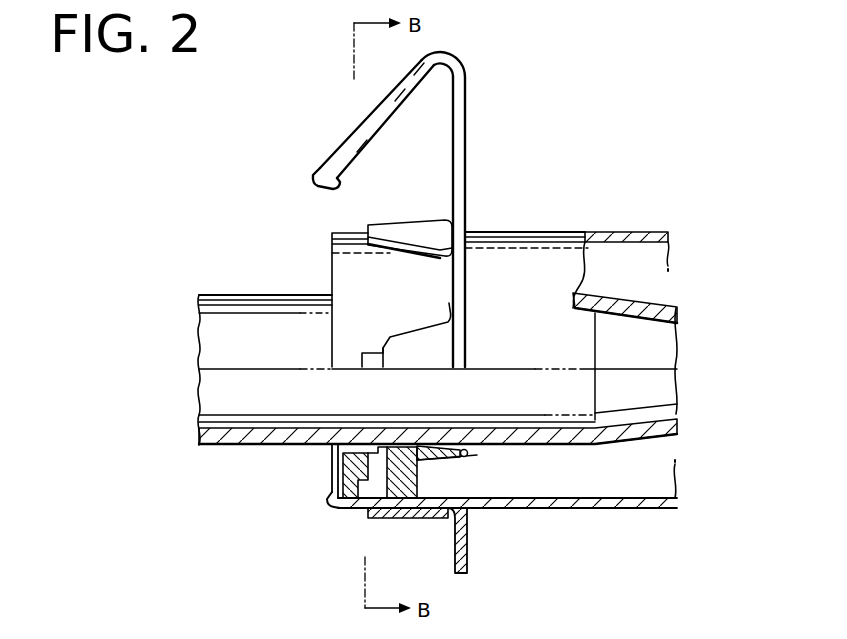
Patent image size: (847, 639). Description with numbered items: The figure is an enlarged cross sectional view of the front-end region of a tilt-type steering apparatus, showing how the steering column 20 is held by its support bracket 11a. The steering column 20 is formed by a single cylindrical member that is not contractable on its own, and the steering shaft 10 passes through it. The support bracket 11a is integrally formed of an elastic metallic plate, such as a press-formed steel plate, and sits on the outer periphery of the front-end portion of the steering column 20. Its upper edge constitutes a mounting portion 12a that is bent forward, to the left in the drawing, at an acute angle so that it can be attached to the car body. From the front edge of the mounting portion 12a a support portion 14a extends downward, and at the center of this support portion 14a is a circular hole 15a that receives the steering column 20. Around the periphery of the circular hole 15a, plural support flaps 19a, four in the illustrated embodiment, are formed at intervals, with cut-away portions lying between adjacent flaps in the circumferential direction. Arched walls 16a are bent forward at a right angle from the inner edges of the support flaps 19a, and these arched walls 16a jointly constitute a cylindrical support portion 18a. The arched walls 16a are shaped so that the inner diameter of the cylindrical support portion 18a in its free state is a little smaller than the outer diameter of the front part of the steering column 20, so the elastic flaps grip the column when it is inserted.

The steering shaft 10 is at (273, 308).
The support bracket 11a is at (472, 88).
The mounting portion 12a is at (373, 133).
The support portion 14a is at (460, 281).
The circular hole 15a is at (447, 494).
The arched walls 16a is at (423, 342).
The cylindrical support portion 18a is at (415, 516).
The support flaps 19a is at (459, 183).
The steering column 20 is at (570, 275).